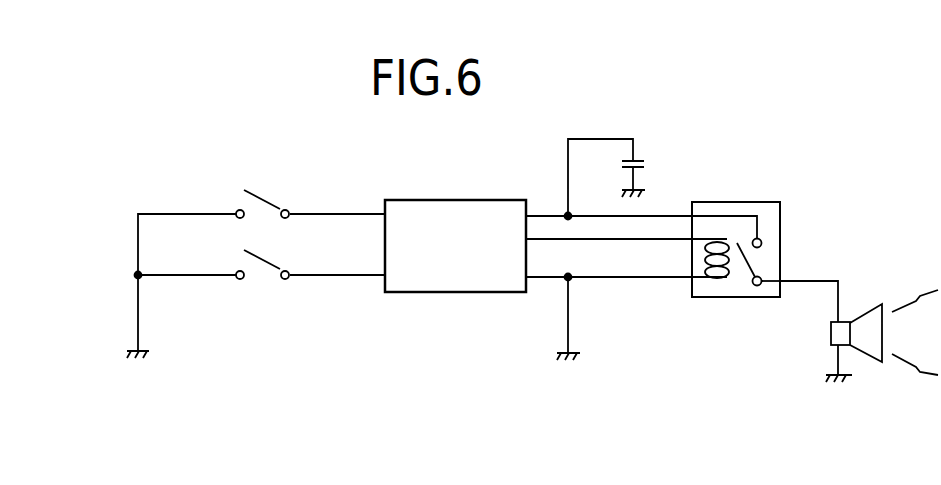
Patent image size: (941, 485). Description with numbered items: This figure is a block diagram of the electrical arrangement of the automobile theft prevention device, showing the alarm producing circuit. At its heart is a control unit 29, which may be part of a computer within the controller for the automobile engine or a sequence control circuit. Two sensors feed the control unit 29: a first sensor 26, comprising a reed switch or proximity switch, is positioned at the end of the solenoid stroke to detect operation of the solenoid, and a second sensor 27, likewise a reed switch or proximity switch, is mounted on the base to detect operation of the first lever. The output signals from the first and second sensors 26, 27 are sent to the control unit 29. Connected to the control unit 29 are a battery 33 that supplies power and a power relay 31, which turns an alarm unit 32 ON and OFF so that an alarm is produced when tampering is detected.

The first sensor 26 is at (267, 268).
The second sensor 27 is at (272, 202).
The control unit 29 is at (456, 294).
The power relay 31 is at (720, 202).
The alarm unit 32 is at (830, 338).
The battery 33 is at (640, 160).